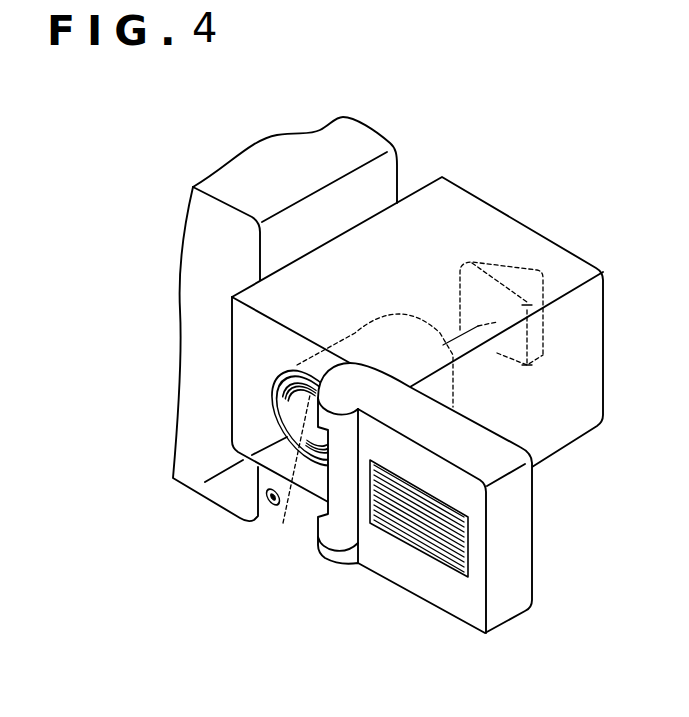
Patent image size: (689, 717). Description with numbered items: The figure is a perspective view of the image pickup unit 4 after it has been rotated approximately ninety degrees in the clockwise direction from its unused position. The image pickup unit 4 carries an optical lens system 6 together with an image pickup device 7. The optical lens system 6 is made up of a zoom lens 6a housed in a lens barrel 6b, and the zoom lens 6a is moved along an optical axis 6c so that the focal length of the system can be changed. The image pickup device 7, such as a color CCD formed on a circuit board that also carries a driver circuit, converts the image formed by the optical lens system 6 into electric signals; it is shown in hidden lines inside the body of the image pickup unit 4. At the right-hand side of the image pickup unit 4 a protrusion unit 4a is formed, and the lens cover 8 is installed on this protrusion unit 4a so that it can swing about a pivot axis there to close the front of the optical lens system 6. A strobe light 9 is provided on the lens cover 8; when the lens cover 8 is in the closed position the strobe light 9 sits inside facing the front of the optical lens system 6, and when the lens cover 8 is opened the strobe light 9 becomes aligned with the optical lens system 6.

The image pickup unit 4 is at (553, 238).
The protrusion unit 4a is at (334, 548).
The optical lens system 6 is at (284, 408).
The zoom lens 6a is at (288, 476).
The lens barrel 6b is at (367, 322).
The optical axis 6c is at (453, 338).
The image pickup device 7 is at (511, 305).
The lens cover 8 is at (533, 543).
The strobe light 9 is at (430, 558).